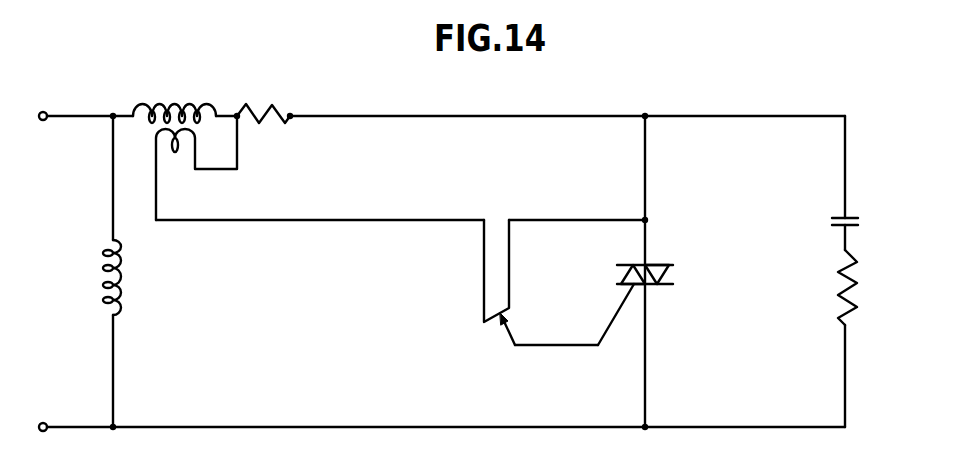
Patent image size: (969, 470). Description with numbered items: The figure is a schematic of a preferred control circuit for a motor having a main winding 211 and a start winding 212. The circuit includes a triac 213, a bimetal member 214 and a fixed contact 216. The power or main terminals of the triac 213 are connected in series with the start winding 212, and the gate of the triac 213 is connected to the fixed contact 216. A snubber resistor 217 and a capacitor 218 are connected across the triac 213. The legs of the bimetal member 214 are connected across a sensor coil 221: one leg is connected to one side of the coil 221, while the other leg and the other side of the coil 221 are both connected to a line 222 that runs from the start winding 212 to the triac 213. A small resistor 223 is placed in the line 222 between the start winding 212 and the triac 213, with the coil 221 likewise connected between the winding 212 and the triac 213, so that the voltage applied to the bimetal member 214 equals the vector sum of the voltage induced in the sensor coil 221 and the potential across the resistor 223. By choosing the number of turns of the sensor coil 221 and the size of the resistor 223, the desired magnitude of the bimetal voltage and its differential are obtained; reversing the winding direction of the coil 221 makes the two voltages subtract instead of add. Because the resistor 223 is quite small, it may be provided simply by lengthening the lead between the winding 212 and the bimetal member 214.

The main winding 211 is at (110, 270).
The start winding 212 is at (176, 103).
The triac 213 is at (672, 274).
The bimetal member 214 is at (483, 302).
The fixed contact 216 is at (497, 329).
The snubber resistor 217 is at (856, 283).
The capacitor 218 is at (852, 219).
The sensor coil 221 is at (175, 151).
The line 222 is at (647, 195).
The resistor 223 is at (273, 108).